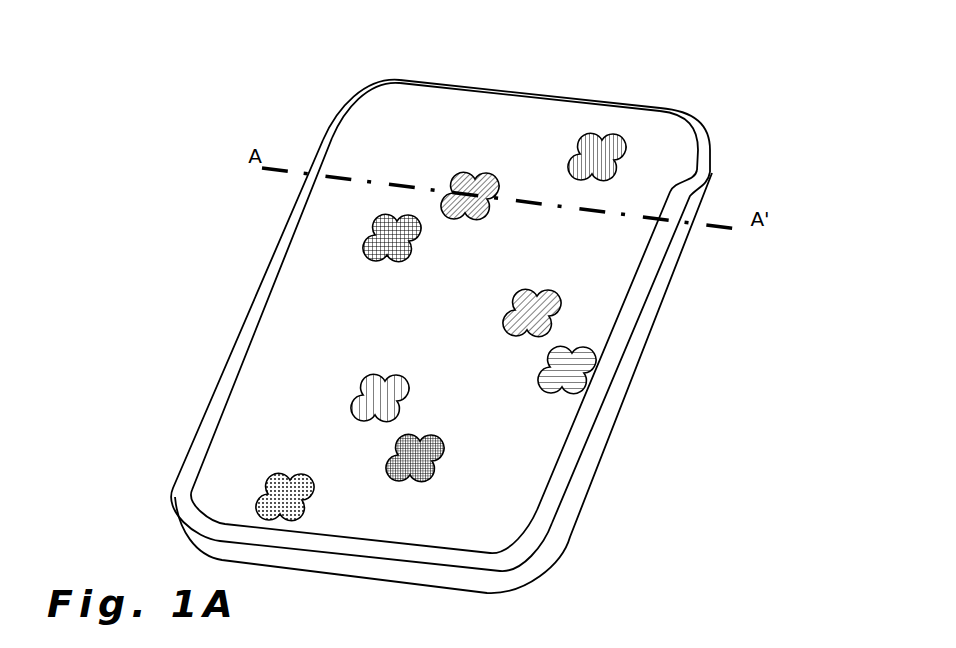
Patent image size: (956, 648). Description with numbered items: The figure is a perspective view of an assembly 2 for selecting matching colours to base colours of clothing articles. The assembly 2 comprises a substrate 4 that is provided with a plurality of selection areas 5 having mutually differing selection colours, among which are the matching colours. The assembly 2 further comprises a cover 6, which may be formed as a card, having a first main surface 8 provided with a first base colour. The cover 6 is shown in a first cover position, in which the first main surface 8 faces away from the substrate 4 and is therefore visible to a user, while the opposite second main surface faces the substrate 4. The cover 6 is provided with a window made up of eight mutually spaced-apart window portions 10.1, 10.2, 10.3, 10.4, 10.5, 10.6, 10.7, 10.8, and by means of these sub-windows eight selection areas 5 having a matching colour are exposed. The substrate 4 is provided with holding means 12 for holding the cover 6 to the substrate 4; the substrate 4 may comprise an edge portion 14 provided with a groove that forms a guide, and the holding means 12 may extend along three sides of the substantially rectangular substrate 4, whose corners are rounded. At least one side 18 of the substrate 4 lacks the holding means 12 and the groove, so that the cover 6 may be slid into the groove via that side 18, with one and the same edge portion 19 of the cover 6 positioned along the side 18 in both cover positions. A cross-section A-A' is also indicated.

The assembly 2 is at (370, 78).
The substrate 4 is at (698, 198).
The selection areas 5 is at (600, 153).
The cover 6 is at (517, 137).
The first main surface 8 is at (420, 110).
The window portion 10.1 is at (600, 167).
The window portion 10.2 is at (560, 377).
The window portion 10.3 is at (433, 470).
The window portion 10.4 is at (285, 490).
The window portion 10.5 is at (363, 395).
The window portion 10.6 is at (373, 245).
The window portion 10.7 is at (555, 307).
The window portion 10.8 is at (477, 173).
The holding means 12 is at (248, 330).
The edge portion 14 is at (253, 292).
The side 18 is at (599, 100).
The edge portion 19 is at (617, 100).